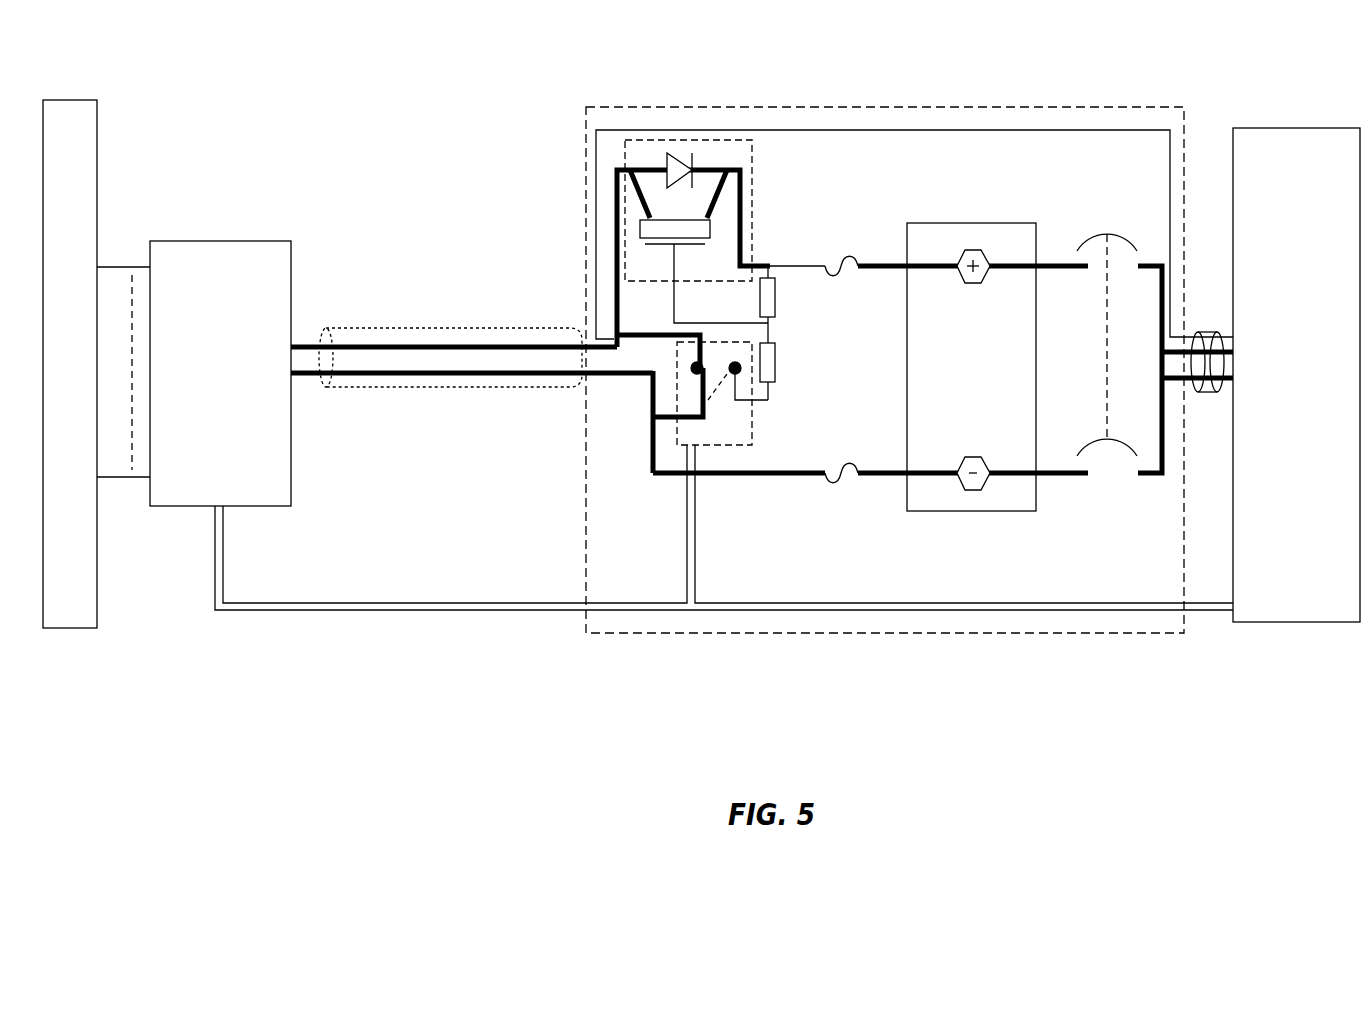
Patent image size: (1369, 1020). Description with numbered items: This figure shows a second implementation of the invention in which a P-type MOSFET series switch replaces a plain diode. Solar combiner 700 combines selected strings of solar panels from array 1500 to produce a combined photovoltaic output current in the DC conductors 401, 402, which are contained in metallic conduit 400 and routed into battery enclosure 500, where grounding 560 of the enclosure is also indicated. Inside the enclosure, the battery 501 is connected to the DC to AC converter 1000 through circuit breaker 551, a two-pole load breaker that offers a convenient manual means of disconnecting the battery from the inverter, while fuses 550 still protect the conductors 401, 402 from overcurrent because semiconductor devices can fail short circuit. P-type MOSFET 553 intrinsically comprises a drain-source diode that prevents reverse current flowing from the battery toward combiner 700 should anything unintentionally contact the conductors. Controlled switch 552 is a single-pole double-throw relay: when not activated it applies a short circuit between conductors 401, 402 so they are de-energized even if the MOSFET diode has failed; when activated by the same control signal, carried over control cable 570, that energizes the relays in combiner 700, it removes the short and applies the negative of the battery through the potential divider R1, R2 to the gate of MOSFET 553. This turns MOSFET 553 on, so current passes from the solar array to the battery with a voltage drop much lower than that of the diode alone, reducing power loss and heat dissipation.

The solar array 1500 is at (100, 151).
The solar combiner 700 is at (220, 373).
The metallic conduit 400 is at (448, 326).
The photovoltaic output conductor 401 is at (393, 354).
The photovoltaic output conductor 402 is at (440, 380).
The grounding 560 is at (1153, 126).
The battery enclosure 500 is at (1127, 638).
The P-type MOSFET 553 is at (695, 138).
The potential divider resistor R2 is at (785, 304).
The potential divider resistor R1 is at (785, 371).
The controlled switch 552 is at (741, 449).
The control cable 570 is at (483, 613).
The fuses 550 is at (853, 453).
The battery 501 is at (971, 367).
The circuit breaker 551 is at (1110, 453).
The DC to AC converter 1000 is at (1280, 625).